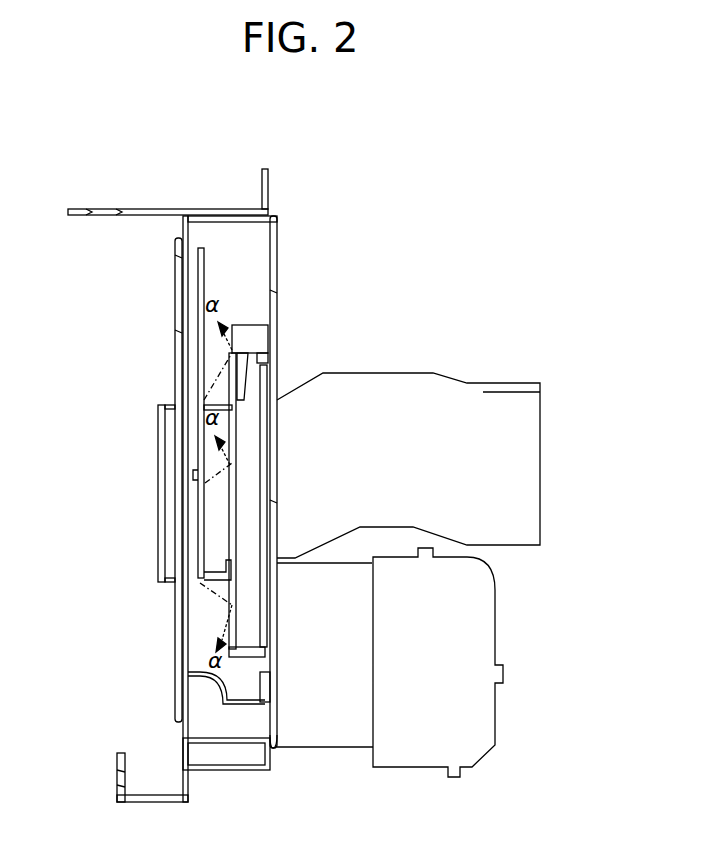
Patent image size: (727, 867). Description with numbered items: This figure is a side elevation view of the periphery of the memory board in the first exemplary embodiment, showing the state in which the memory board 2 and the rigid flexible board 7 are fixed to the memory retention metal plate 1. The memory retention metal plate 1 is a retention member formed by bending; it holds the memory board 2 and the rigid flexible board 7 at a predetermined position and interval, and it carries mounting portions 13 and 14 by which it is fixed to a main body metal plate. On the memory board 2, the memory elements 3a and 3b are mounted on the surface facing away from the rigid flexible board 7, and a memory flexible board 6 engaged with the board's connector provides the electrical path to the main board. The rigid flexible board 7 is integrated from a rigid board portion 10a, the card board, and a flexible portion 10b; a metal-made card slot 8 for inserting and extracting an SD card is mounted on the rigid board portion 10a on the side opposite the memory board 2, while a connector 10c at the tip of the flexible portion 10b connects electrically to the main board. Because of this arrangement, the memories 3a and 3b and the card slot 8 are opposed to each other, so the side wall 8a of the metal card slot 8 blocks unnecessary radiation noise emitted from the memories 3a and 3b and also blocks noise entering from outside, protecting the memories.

The memory retention metal plate 1 is at (158, 208).
The mounting portion 14 is at (93, 207).
The memory board 2 is at (176, 718).
The memory element 3a is at (204, 258).
The memory element 3b is at (197, 665).
The mounting portion 13 is at (115, 776).
The card slot 8 is at (277, 337).
The side wall 8a is at (238, 430).
The rigid board portion 10a is at (277, 294).
The rigid flexible board 7 is at (280, 712).
The flexible portion 10b is at (352, 738).
The connector 10c is at (490, 632).
The memory flexible board 6 is at (518, 458).